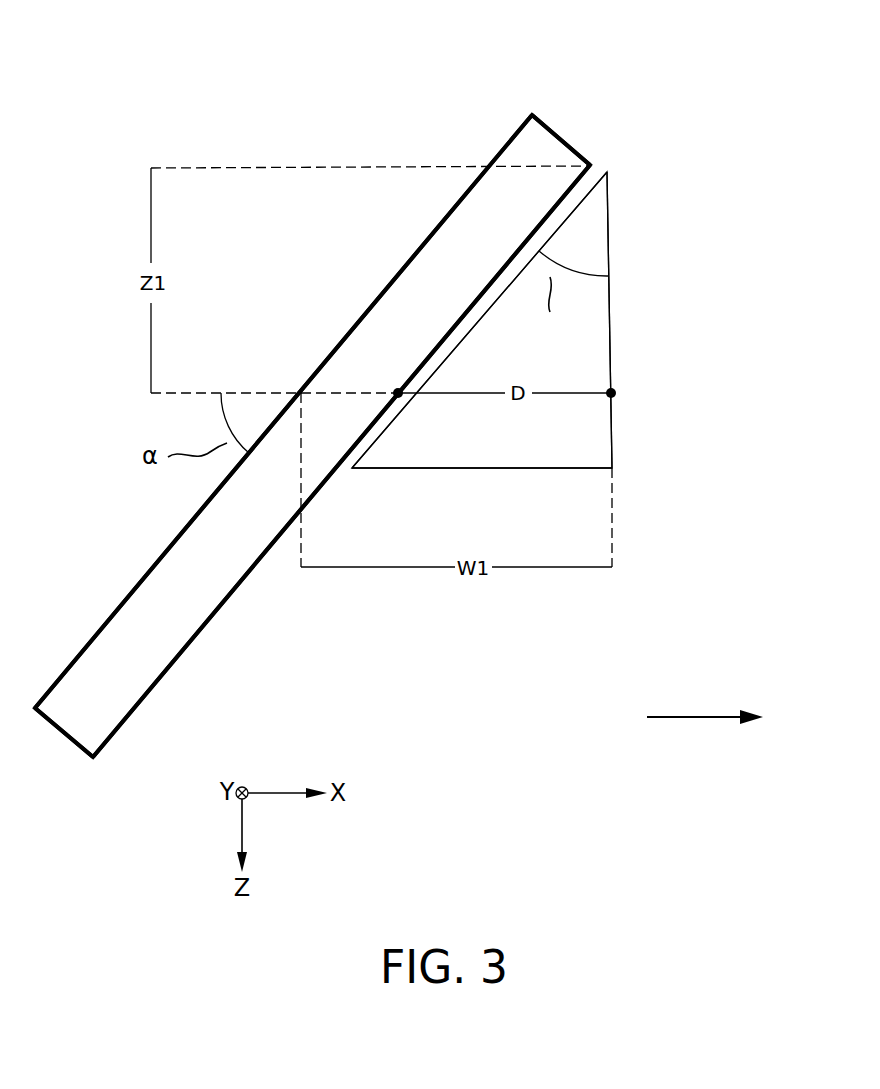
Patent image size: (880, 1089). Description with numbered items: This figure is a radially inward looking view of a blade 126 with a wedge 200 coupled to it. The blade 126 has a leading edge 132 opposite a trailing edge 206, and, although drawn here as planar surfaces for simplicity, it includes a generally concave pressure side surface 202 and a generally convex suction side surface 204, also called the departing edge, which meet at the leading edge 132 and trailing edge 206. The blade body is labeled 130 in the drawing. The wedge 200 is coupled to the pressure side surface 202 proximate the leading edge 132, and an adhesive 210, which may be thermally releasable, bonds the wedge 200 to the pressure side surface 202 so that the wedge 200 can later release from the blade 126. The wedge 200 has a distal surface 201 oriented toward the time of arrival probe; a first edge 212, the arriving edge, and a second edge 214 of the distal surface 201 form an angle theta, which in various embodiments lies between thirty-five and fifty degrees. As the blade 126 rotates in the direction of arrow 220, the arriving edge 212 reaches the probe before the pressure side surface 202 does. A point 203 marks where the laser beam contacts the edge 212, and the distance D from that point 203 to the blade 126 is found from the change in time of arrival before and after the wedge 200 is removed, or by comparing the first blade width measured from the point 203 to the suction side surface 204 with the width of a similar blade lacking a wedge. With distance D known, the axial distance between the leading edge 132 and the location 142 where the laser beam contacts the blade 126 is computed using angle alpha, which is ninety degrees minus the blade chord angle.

The blade 126 is at (451, 95).
The glass plate 130 is at (190, 575).
The leading edge 132 is at (550, 135).
The location where laser beam contacts blade 142 is at (398, 393).
The wedge 200 is at (622, 195).
The distal surface 201 is at (496, 452).
The pressure side surface 202 is at (223, 603).
The point 203 is at (612, 393).
The suction side surface 204 is at (150, 570).
The trailing edge 206 is at (77, 748).
The adhesive 210 is at (347, 462).
The first edge 212 is at (610, 308).
The second edge 214 is at (547, 245).
The arrow 220 is at (690, 718).